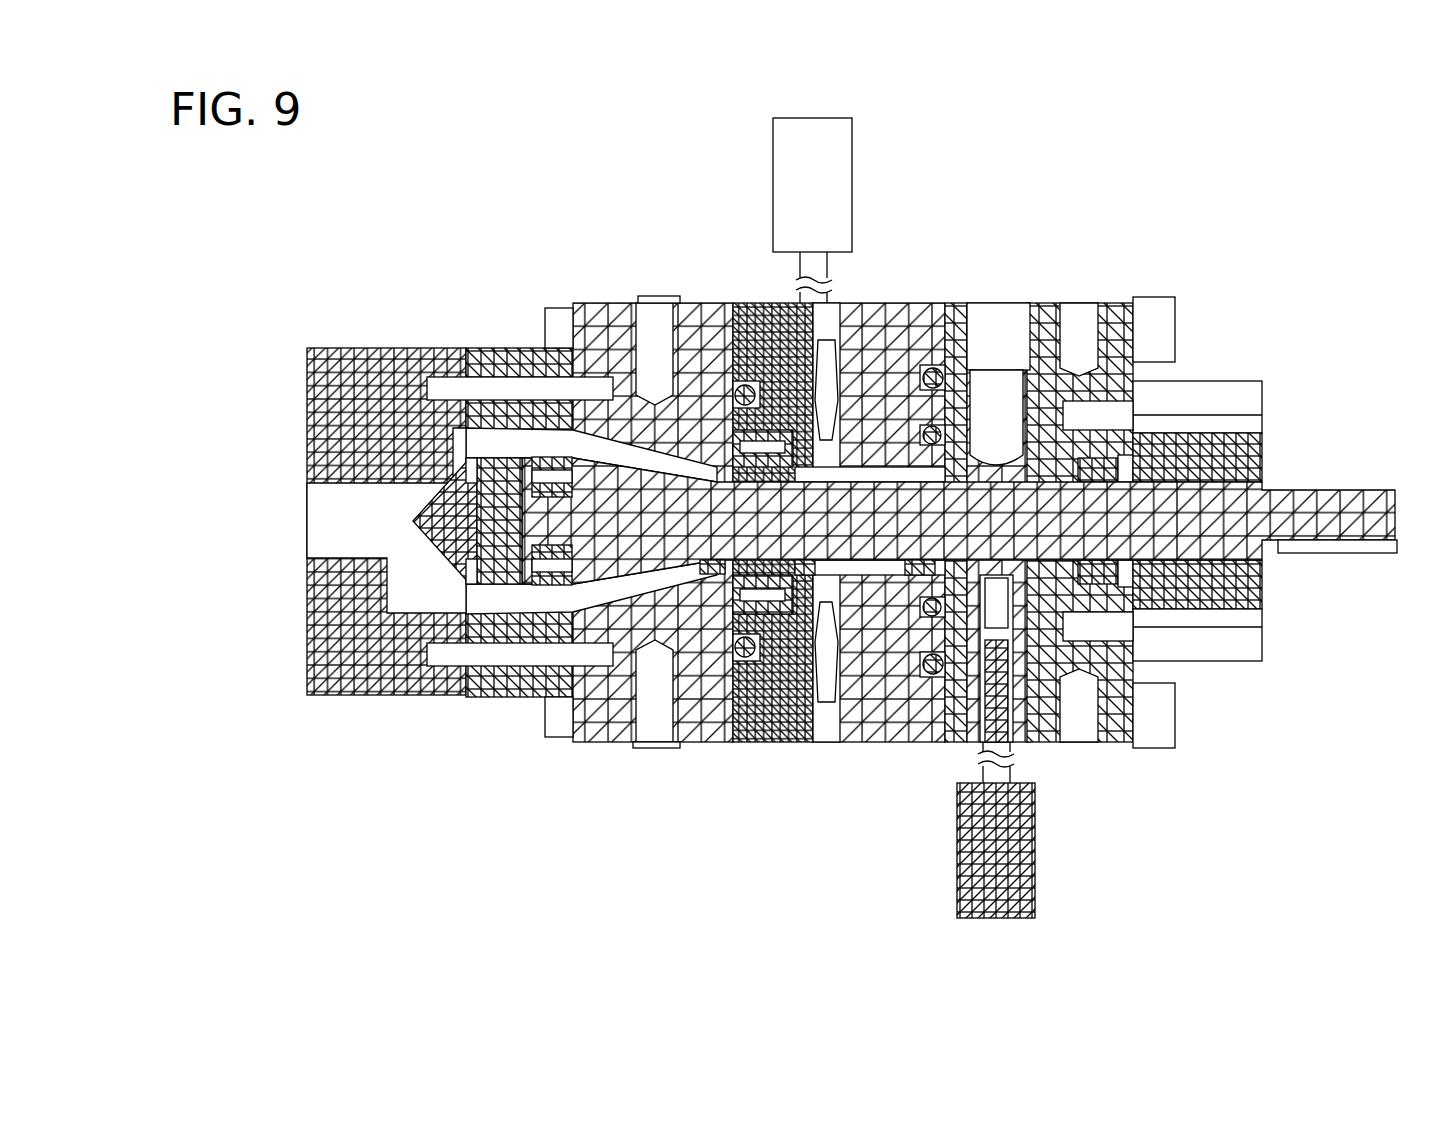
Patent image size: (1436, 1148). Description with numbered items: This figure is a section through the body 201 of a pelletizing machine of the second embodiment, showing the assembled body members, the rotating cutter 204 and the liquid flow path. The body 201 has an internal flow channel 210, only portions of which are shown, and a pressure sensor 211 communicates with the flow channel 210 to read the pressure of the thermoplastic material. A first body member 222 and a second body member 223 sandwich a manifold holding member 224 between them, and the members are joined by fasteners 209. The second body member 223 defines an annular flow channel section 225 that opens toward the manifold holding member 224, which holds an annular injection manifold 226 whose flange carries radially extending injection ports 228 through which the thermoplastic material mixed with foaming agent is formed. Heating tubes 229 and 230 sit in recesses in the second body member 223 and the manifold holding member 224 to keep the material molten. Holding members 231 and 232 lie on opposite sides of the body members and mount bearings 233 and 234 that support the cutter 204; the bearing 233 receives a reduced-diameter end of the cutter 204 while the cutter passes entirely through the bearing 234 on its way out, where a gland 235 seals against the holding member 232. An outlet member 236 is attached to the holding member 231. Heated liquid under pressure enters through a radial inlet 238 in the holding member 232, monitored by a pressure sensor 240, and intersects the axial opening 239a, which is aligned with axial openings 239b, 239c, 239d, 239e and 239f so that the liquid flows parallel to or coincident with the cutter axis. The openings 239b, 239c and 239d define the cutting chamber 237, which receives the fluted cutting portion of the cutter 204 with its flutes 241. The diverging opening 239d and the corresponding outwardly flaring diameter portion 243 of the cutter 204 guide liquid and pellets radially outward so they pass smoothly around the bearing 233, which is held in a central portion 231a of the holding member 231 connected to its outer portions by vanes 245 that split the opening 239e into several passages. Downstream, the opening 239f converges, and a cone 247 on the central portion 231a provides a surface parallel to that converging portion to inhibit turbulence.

The body 201 is at (688, 238).
The cutter 204 is at (1302, 488).
The fasteners 209 is at (1175, 320).
The internal flow channel 210 is at (833, 312).
The pressure sensor 211 is at (774, 135).
The first body member 222 is at (592, 302).
The second body member 223 is at (915, 472).
The manifold holding member 224 is at (766, 322).
The annular flow channel section 225 is at (904, 304).
The annular injection manifold 226 is at (748, 660).
The injection ports 228 is at (850, 440).
The heating tube 229 is at (958, 338).
The heating tube 230 is at (745, 744).
The holding member 231 is at (478, 352).
The central portion of the holding member 231a is at (468, 478).
The holding member 232 is at (1118, 310).
The bearing 233 is at (497, 605).
The bearing 234 is at (1086, 326).
The gland 235 is at (1250, 380).
The outlet member 236 is at (338, 355).
The cutting chamber 237 is at (1028, 320).
The inlet 238 is at (978, 332).
The axial opening 239a is at (962, 752).
The axial opening 239b is at (915, 578).
The axial opening 239c is at (802, 578).
The axial opening 239d is at (712, 578).
The axial opening 239e is at (550, 600).
The axial opening 239f is at (330, 492).
The pressure sensor 240 is at (1030, 876).
The flutes 241 is at (820, 350).
The outwardly flaring diameter portion 243 is at (638, 428).
The vanes 245 is at (650, 330).
The cone 247 is at (420, 548).